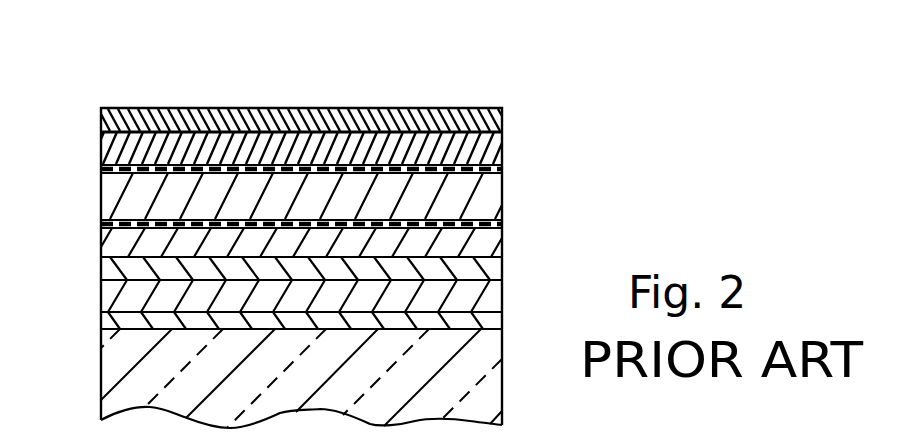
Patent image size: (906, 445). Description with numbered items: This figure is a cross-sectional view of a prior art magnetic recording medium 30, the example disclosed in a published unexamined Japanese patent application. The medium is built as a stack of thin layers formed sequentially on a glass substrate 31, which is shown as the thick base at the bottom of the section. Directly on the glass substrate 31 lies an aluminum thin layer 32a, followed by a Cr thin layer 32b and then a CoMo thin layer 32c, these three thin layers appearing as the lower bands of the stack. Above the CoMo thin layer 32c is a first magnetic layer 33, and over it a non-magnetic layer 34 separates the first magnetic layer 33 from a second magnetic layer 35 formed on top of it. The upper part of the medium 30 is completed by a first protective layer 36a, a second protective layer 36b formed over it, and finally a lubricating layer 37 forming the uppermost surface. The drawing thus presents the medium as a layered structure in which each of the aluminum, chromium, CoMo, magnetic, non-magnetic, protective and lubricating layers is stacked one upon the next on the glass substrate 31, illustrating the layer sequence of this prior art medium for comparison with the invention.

The magnetic recording medium 30 is at (425, 93).
The glass substrate 31 is at (485, 343).
The aluminum thin layer 32a is at (105, 320).
The Cr thin layer 32b is at (107, 292).
The CoMo thin layer 32c is at (493, 272).
The first magnetic layer 33 is at (493, 245).
The non-magnetic layer 34 is at (101, 220).
The second magnetic layer 35 is at (492, 200).
The first protective layer 36a is at (503, 170).
The second protective layer 36b is at (101, 150).
The lubricating layer 37 is at (310, 108).